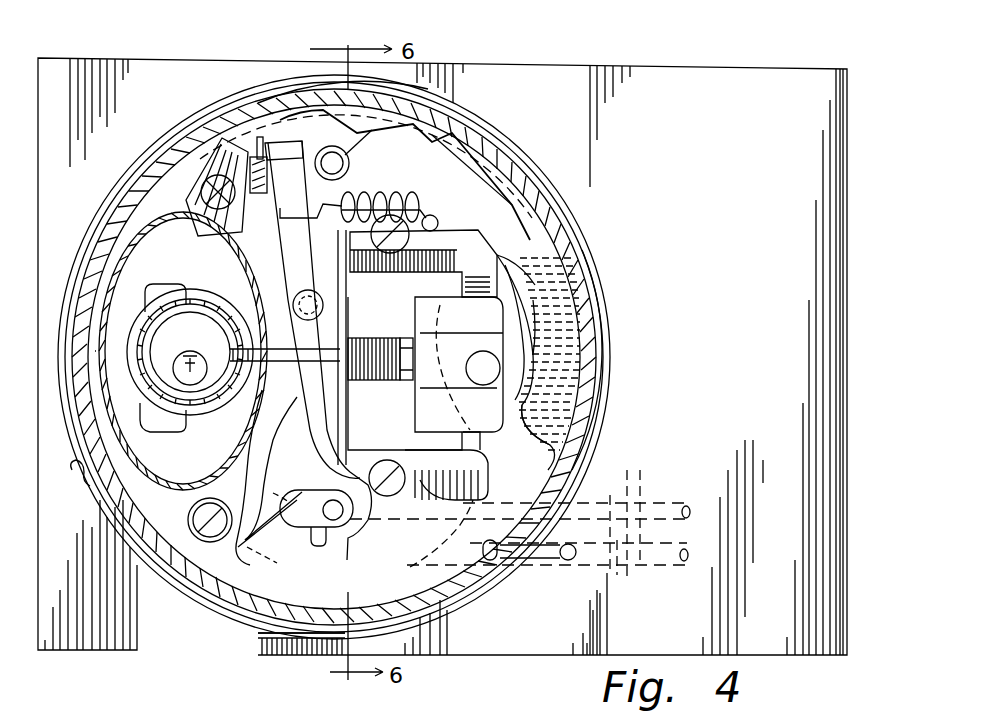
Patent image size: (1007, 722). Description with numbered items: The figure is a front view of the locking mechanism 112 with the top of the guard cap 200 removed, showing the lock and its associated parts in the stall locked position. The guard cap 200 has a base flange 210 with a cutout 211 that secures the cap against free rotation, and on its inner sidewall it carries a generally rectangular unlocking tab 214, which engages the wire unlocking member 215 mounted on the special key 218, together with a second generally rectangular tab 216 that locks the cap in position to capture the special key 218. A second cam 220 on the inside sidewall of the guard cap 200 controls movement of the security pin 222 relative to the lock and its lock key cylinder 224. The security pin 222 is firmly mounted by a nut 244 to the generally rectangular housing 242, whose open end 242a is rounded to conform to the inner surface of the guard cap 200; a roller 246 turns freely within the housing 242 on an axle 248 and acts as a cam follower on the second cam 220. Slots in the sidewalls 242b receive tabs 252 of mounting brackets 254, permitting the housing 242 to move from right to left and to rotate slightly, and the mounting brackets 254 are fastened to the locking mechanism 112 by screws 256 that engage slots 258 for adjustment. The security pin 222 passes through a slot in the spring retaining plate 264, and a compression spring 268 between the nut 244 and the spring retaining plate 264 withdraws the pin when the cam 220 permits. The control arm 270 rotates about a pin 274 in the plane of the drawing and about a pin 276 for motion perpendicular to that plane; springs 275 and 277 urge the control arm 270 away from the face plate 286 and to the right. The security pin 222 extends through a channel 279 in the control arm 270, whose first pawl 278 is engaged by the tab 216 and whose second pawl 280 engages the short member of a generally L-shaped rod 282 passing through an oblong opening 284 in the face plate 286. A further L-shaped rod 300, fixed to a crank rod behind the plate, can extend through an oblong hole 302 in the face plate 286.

The locking mechanism 112 is at (858, 68).
The guard cap 200 is at (533, 345).
The base flange 210 is at (580, 235).
The cutout 211 is at (62, 493).
The unlocking tab 214 is at (485, 124).
The wire unlocking member 215 is at (168, 284).
The second generally rectangular tab 216 is at (222, 150).
The special key 218 is at (118, 245).
The second cam 220 is at (577, 417).
The security pin 222 is at (190, 367).
The lock key cylinder 224 is at (200, 342).
The housing 242 is at (565, 262).
The open end 242a is at (508, 315).
The sidewalls 242b is at (505, 215).
The nut 244 is at (398, 407).
The roller 246 is at (580, 362).
The axle 248 is at (550, 403).
The tabs 252 is at (480, 312).
The mounting brackets 254 is at (492, 293).
The screws 256 is at (440, 240).
The slots 258 is at (296, 240).
The spring retaining plate 264 is at (345, 418).
The compression spring 268 is at (368, 345).
The control arm 270 is at (262, 262).
The pin 274 is at (440, 96).
The spring 275 is at (330, 296).
The pin 276 is at (243, 165).
The spring 277 is at (415, 200).
The first pawl 278 is at (222, 602).
The channel 279 is at (297, 397).
The second pawl 280 is at (322, 562).
The L-shaped rod 282 is at (345, 545).
The oblong opening 284 is at (200, 505).
The face plate 286 is at (748, 172).
The L-shaped rod 300 is at (648, 584).
The oblong hole 302 is at (548, 566).